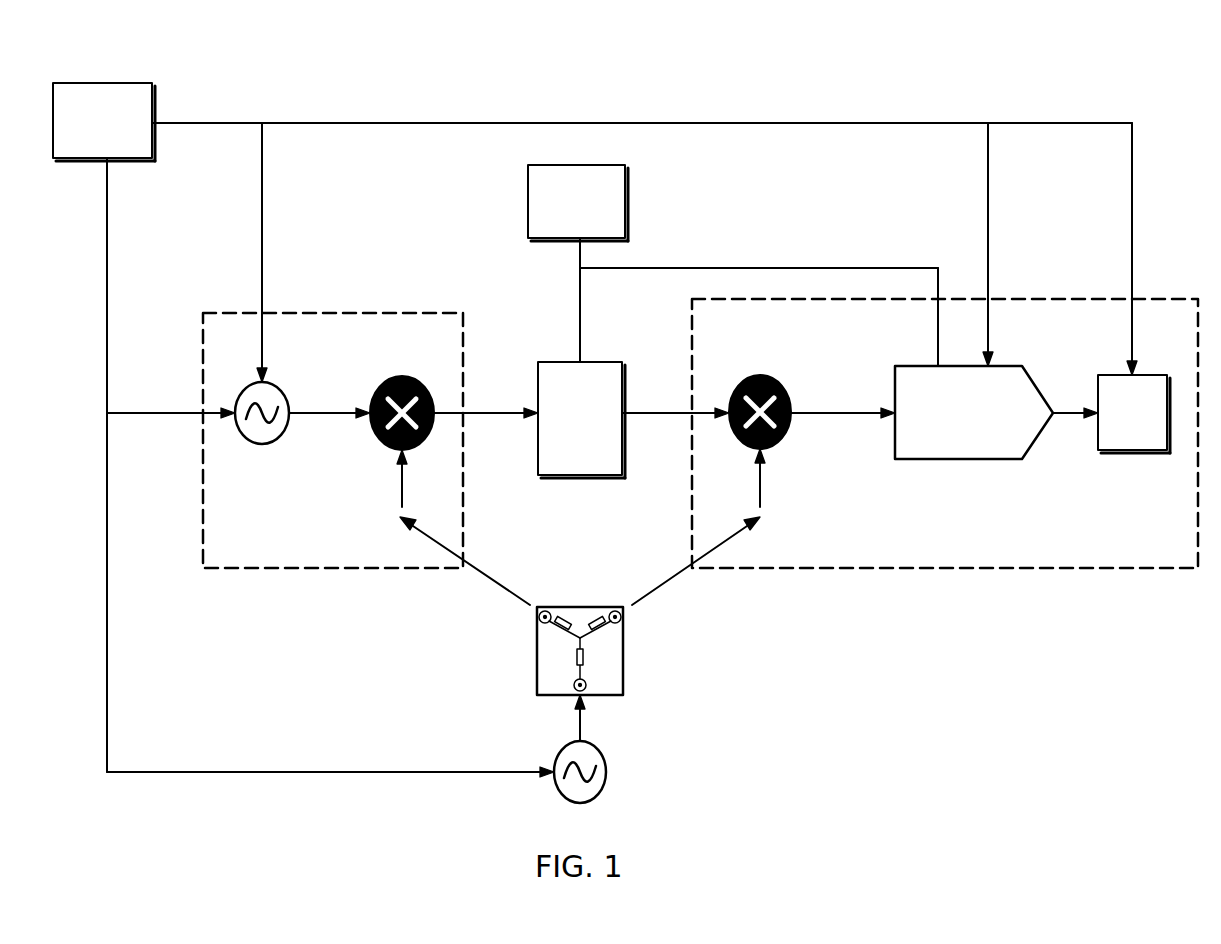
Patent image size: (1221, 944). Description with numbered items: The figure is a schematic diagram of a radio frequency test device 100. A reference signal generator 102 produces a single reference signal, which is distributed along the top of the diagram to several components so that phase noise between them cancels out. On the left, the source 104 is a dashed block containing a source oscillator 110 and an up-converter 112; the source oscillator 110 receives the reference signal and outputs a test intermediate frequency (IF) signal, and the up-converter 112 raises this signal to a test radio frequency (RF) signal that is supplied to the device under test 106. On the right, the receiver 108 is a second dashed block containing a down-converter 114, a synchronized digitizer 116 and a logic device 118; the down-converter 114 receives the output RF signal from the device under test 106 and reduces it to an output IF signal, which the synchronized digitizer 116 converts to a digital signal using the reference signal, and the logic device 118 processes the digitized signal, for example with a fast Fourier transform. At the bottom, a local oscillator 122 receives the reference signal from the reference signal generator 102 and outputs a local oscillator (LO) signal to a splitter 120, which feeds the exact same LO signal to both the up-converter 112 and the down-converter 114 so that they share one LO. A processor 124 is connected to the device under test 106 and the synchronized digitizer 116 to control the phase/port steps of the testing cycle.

The radio frequency test device 100 is at (1062, 58).
The reference signal generator 102 is at (88, 130).
The source 104 is at (320, 355).
The device under test 106 is at (567, 428).
The receiver 108 is at (801, 342).
The source oscillator 110 is at (262, 444).
The up-converter 112 is at (381, 442).
The down-converter 114 is at (779, 440).
The synchronized digitizer 116 is at (950, 425).
The logic device 118 is at (1117, 425).
The splitter 120 is at (623, 650).
The local oscillator 122 is at (606, 772).
The processor 124 is at (563, 212).